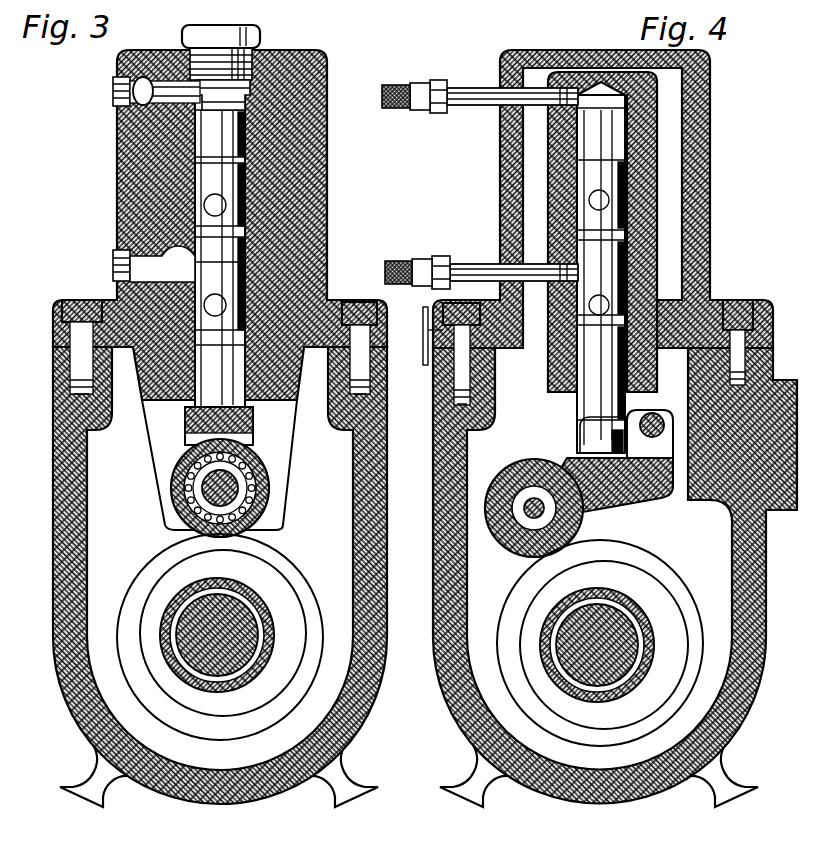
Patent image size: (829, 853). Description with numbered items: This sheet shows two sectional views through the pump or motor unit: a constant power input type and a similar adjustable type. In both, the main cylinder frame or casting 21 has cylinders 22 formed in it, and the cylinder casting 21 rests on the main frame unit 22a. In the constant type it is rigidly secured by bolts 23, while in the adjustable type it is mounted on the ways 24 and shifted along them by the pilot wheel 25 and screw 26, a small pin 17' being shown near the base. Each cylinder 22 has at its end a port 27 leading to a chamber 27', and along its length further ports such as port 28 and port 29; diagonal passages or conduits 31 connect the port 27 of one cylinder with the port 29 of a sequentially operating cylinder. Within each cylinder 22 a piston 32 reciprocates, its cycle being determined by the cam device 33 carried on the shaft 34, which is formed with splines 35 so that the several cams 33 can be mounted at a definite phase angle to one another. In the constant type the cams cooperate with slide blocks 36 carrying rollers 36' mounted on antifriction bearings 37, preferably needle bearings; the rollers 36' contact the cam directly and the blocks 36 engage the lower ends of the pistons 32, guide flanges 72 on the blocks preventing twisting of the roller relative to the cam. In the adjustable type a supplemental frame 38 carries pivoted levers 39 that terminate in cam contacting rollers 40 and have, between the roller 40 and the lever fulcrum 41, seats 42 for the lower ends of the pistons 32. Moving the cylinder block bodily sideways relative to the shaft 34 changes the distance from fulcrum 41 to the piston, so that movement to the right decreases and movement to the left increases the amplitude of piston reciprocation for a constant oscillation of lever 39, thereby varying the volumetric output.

In FIG. 3, the base 17' is at (256, 844).
In FIG. 3, the main cylinder frame or casting 21 is at (319, 154).
In FIG. 3, the cylinders 22 is at (236, 187).
In FIG. 4, the cylinders 22 is at (622, 200).
In FIG. 3, the main frame unit 22a is at (374, 592).
In FIG. 3, the bolts 23 is at (90, 285).
In FIG. 4, the ways 24 is at (692, 279).
In FIG. 4, the pilot wheel 25 is at (427, 309).
In FIG. 4, the screw 26 is at (546, 357).
In FIG. 3, the ports 27 is at (138, 110).
In FIG. 4, the ports 27 is at (480, 116).
In FIG. 3, the chamber 27' is at (247, 67).
In FIG. 3, the port 28 is at (204, 208).
In FIG. 3, the port 29 is at (146, 256).
In FIG. 4, the port 29 is at (487, 248).
In FIG. 3, the passages or conduits 31 is at (138, 80).
In FIG. 3, the pistons 32 is at (240, 242).
In FIG. 4, the pistons 32 is at (600, 144).
In FIG. 3, the cam device 33 is at (266, 567).
In FIG. 4, the cam device 33 is at (680, 603).
In FIG. 3, the shaft 34 is at (200, 600).
In FIG. 4, the shaft 34 is at (648, 615).
In FIG. 3, the splines 35 is at (183, 598).
In FIG. 4, the splines 35 is at (658, 612).
In FIG. 3, the slide blocks 36 is at (246, 488).
In FIG. 3, the rollers 36' is at (256, 488).
In FIG. 3, the antifriction bearings 37 is at (232, 492).
In FIG. 4, the supplemental frame 38 is at (688, 488).
In FIG. 4, the levers 39 is at (627, 490).
In FIG. 4, the cam contacting rollers 40 is at (540, 450).
In FIG. 4, the lever fulcrum 41 is at (645, 420).
In FIG. 4, the seats 42 is at (680, 392).
In FIG. 3, the guide flanges 72 is at (212, 440).